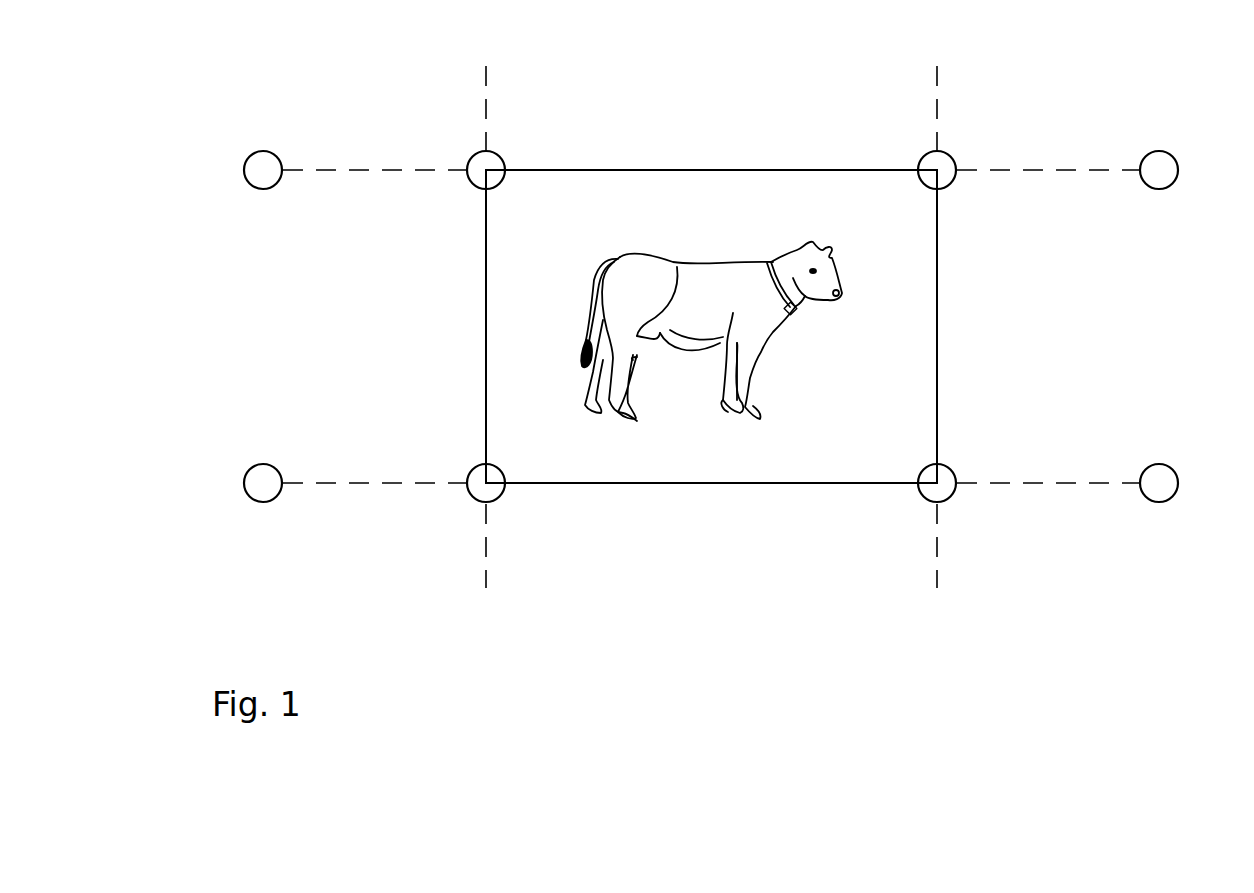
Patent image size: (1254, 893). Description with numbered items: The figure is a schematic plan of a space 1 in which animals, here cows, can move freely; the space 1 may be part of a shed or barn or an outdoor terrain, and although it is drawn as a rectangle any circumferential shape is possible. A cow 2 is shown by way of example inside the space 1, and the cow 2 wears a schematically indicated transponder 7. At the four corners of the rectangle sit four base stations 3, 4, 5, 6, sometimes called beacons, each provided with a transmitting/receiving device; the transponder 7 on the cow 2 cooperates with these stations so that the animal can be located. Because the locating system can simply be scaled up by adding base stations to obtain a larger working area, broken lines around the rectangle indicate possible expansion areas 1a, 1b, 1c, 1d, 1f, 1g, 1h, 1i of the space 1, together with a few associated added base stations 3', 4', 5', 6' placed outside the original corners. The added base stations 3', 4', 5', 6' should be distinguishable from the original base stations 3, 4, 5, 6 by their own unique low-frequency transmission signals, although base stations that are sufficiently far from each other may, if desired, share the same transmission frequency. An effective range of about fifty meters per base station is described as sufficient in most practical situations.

The space 1 is at (865, 238).
The expansion area 1a is at (387, 331).
The expansion area 1b is at (357, 97).
The expansion area 1c is at (728, 97).
The expansion area 1d is at (1064, 97).
The expansion area 1f is at (1062, 331).
The expansion area 1g is at (1064, 588).
The expansion area 1h is at (728, 588).
The expansion area 1i is at (358, 588).
The cow 2 is at (711, 317).
The base station 3 is at (462, 143).
The added base station 3' is at (239, 143).
The base station 4 is at (961, 143).
The added base station 4' is at (1185, 143).
The base station 5 is at (961, 511).
The added base station 5' is at (1185, 511).
The base station 6 is at (462, 511).
The added base station 6' is at (239, 511).
The transponder 7 is at (798, 314).